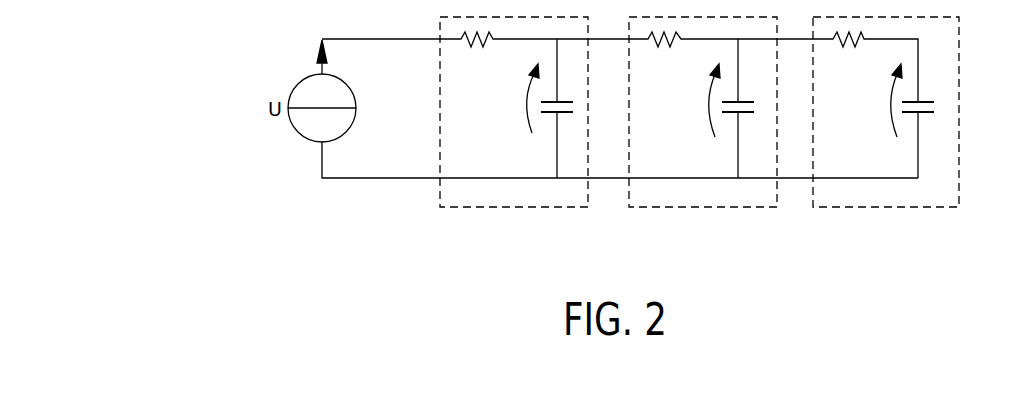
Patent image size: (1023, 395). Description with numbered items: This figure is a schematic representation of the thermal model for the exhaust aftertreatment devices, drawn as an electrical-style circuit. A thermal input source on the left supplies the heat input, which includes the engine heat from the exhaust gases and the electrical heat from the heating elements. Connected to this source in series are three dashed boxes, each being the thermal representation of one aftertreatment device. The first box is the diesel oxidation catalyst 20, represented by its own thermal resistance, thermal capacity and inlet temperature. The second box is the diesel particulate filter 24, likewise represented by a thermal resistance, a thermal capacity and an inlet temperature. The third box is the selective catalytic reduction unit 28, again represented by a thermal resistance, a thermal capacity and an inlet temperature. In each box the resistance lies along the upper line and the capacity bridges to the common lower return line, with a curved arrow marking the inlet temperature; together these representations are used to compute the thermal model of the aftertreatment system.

The diesel oxidation catalyst 20 is at (505, 210).
The diesel particulate filter 24 is at (700, 210).
The selective catalytic reduction unit 28 is at (890, 210).